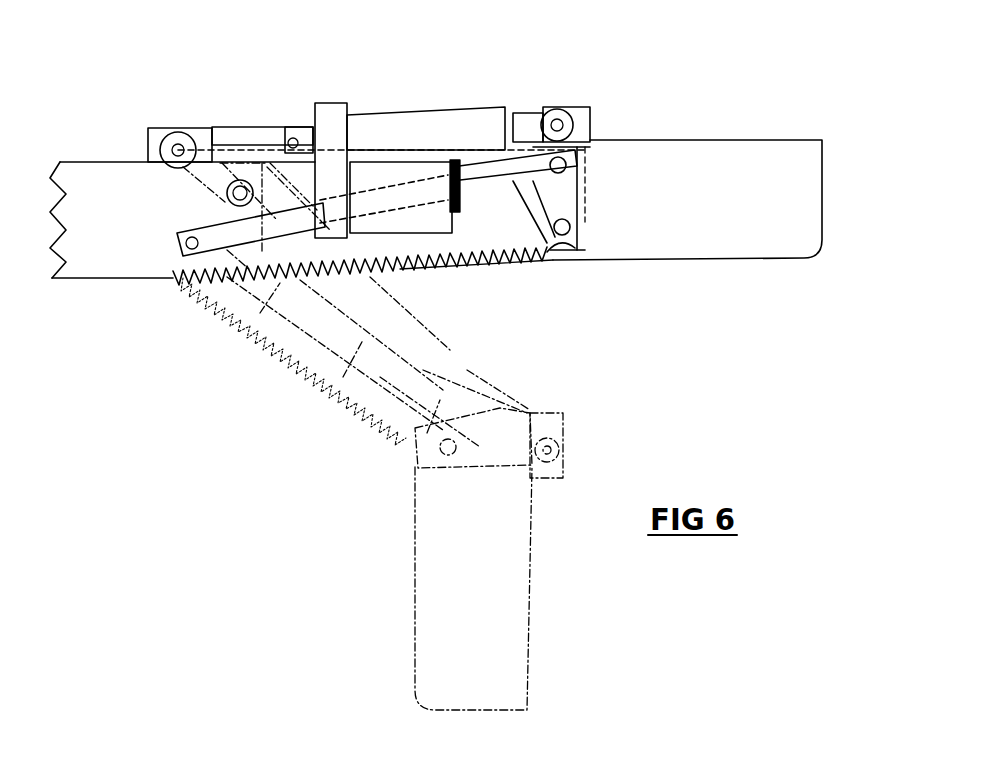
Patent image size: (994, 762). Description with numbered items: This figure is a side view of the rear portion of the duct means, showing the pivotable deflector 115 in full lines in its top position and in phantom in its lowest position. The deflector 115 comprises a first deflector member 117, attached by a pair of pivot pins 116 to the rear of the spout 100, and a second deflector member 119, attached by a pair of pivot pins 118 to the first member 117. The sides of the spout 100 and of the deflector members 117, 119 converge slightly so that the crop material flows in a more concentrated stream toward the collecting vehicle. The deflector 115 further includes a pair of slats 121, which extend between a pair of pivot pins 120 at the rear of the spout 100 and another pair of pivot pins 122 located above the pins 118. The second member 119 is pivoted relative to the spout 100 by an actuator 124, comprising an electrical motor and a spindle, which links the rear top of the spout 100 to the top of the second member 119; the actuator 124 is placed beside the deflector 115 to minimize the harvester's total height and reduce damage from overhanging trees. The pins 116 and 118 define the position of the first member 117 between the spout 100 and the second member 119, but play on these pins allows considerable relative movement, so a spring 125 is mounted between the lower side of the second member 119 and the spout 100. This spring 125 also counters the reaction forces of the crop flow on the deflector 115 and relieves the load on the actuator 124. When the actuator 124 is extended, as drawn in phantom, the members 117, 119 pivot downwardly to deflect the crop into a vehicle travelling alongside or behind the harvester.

The spout 100 is at (92, 178).
The deflector 115 is at (606, 84).
The pivot pins 116 is at (228, 195).
The first deflector member 117 is at (470, 232).
The pivot pins 118 is at (583, 230).
The second deflector member 119 is at (687, 242).
The pivot pins 120 is at (186, 249).
The slats 121 is at (497, 176).
The pivot pins 122 is at (572, 157).
The actuator 124 is at (453, 127).
The spring 125 is at (498, 270).